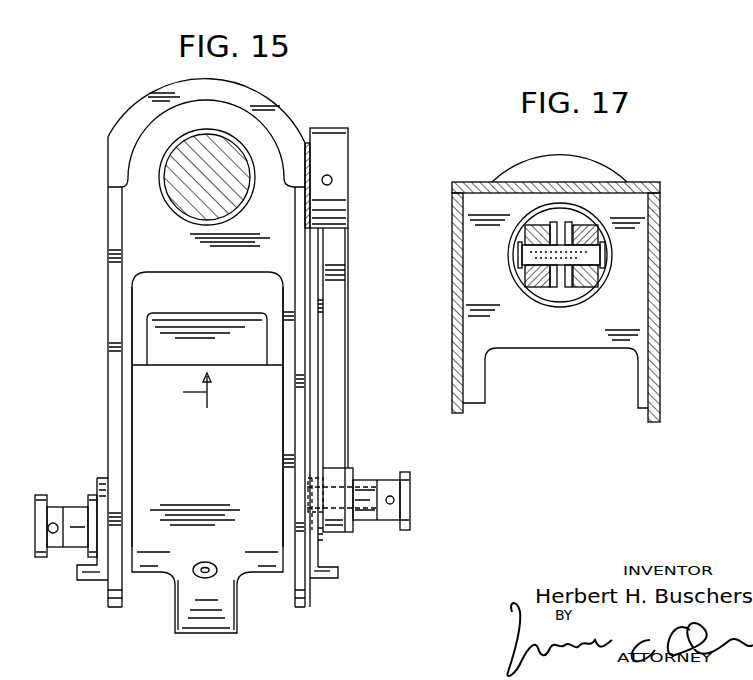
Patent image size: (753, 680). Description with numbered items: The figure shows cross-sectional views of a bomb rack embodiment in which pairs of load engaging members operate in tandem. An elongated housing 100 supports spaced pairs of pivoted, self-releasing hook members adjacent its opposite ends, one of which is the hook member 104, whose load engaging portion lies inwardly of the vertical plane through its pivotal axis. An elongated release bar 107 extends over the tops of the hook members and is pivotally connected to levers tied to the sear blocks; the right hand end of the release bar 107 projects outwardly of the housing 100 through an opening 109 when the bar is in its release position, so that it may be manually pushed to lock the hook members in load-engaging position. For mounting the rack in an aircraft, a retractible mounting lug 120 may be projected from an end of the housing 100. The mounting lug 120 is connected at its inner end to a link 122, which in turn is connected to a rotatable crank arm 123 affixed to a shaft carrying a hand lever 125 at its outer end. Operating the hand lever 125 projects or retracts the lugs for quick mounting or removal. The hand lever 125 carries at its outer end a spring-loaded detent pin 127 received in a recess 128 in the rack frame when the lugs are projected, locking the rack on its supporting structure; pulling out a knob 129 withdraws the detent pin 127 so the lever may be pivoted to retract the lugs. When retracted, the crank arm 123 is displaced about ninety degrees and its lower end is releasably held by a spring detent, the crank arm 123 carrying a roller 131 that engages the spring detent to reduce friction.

In FIG. 15, the housing 100 is at (146, 98).
In FIG. 17, the housing 100 is at (653, 225).
In FIG. 15, the hook member 104 is at (223, 610).
In FIG. 15, the release bar 107 is at (188, 328).
In FIG. 15, the opening 109 is at (175, 288).
In FIG. 15, the mounting lug 120 is at (222, 157).
In FIG. 17, the mounting lug 120 is at (550, 220).
In FIG. 17, the link 122 is at (522, 285).
In FIG. 17, the crank arm 123 is at (545, 287).
In FIG. 15, the hand lever 125 is at (337, 393).
In FIG. 15, the detent pin 127 is at (322, 493).
In FIG. 15, the recess 128 is at (307, 525).
In FIG. 15, the knob 129 is at (408, 497).
In FIG. 17, the roller 131 is at (563, 255).